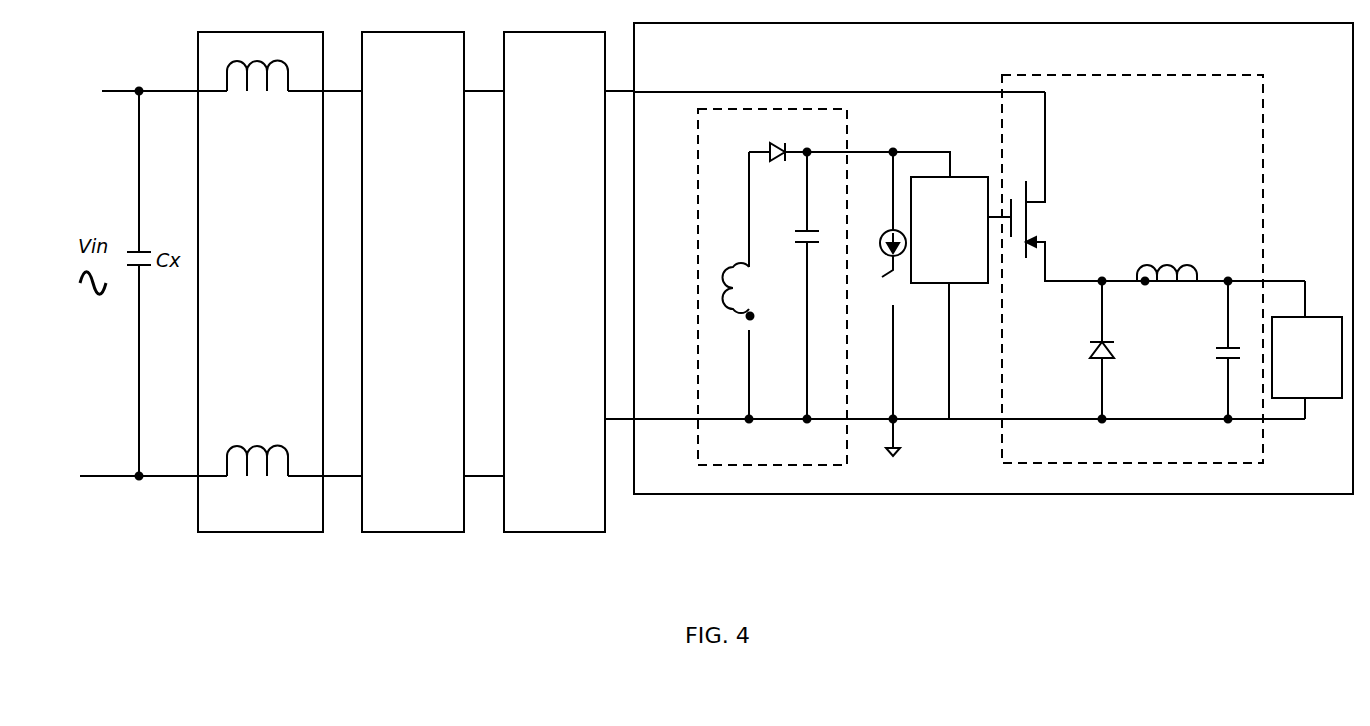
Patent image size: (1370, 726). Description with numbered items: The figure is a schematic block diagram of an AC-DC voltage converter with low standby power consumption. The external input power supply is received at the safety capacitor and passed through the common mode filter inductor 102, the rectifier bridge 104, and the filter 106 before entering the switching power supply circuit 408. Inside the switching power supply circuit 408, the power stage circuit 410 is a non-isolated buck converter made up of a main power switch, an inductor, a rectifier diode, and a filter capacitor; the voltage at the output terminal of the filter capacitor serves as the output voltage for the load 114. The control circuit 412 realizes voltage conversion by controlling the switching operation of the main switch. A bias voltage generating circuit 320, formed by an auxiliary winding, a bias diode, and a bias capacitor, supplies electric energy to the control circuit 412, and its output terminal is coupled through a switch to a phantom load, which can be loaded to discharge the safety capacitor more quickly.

The common mode filter inductor 102 is at (280, 339).
The rectifier bridge 104 is at (394, 334).
The filter 106 is at (537, 322).
The switching power supply circuit 408 is at (827, 84).
The bias voltage generating circuit 320 is at (745, 465).
The control circuit 412 is at (968, 272).
The power stage circuit 410 is at (1113, 463).
The load 114 is at (1289, 384).